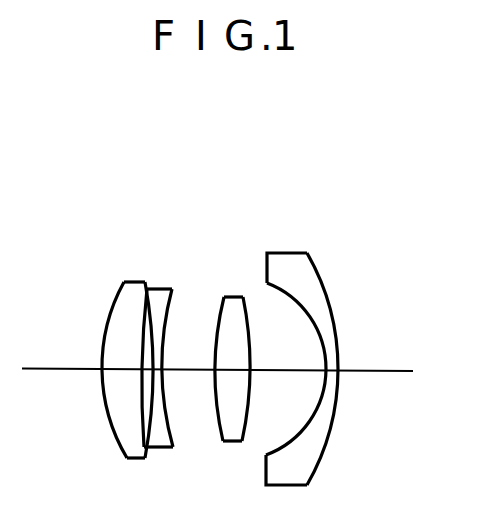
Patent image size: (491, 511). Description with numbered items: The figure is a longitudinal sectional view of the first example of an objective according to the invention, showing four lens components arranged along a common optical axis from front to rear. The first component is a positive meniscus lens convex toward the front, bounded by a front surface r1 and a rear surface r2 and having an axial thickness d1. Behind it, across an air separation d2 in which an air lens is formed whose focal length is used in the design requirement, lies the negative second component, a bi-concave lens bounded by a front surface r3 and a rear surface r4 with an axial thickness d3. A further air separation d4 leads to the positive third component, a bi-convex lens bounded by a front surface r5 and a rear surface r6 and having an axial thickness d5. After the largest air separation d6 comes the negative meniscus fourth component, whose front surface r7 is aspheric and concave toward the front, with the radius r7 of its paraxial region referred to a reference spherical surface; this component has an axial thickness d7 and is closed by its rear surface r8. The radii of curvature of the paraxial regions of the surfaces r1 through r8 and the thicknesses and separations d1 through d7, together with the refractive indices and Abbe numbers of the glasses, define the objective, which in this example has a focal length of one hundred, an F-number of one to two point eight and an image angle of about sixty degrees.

The front surface of first lens component r1 is at (104, 306).
The rear surface of first lens component r2 is at (134, 306).
The front surface of second lens component r3 is at (154, 306).
The rear surface of second lens component r4 is at (173, 306).
The front surface of third lens component r5 is at (218, 298).
The rear surface of third lens component r6 is at (246, 300).
The front aspheric surface of fourth lens component r7 is at (280, 288).
The rear surface of fourth lens component r8 is at (320, 264).
The axial thickness of first lens component d1 is at (126, 370).
The air separation between first and second lens components d2 is at (138, 377).
The axial thickness of second lens component d3 is at (161, 376).
The air separation between second and third lens components d4 is at (189, 358).
The axial thickness of third lens component d5 is at (232, 369).
The air separation between third and fourth lens components d6 is at (282, 360).
The axial thickness of fourth lens component d7 is at (338, 366).